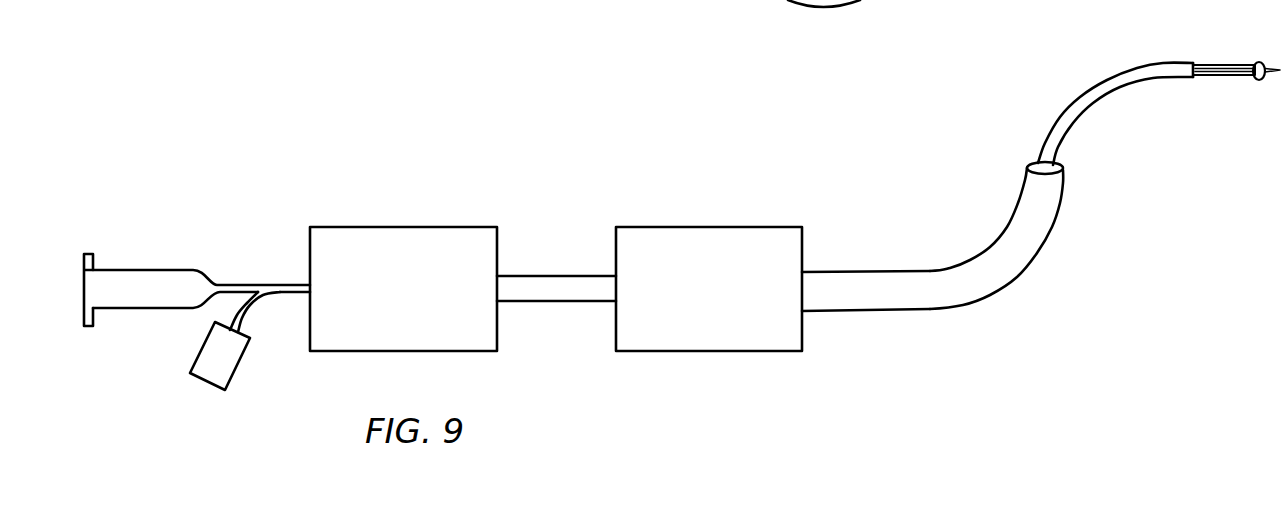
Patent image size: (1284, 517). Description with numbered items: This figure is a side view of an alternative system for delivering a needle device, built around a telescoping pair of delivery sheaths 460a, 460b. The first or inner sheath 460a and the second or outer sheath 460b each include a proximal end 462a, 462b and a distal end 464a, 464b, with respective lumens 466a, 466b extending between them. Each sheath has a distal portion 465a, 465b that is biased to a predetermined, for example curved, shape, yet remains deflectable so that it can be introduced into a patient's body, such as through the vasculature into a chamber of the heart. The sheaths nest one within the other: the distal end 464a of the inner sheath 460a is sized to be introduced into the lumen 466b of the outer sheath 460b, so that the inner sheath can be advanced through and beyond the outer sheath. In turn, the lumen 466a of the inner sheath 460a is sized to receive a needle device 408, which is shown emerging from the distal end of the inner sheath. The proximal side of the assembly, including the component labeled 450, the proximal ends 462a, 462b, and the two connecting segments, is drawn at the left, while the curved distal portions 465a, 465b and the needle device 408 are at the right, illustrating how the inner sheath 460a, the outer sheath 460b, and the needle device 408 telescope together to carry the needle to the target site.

The connector 450 is at (266, 277).
The first or inner sheath 460a is at (577, 248).
The second or outer sheath 460b is at (837, 236).
The proximal end of inner sheath 462a is at (513, 302).
The proximal end of outer sheath 462b is at (825, 312).
The distal end of inner sheath 464a is at (1171, 62).
The distal end of outer sheath 464b is at (1062, 208).
The distal portion of inner sheath 465a is at (1053, 115).
The distal portion of outer sheath 465b is at (960, 318).
The lumen of inner sheath 466a is at (1202, 78).
The lumen of outer sheath 466b is at (1065, 168).
The needle device 408 is at (1234, 84).